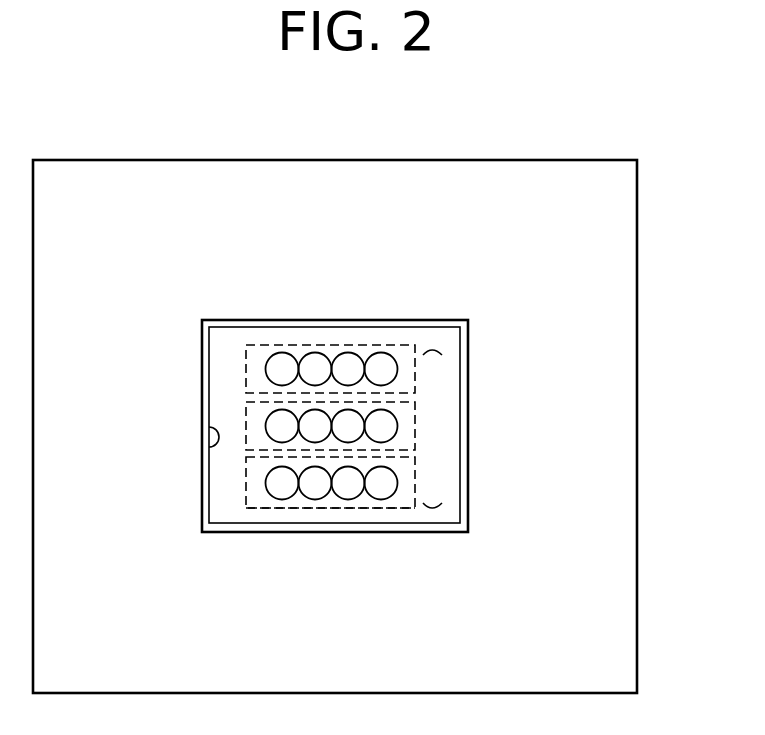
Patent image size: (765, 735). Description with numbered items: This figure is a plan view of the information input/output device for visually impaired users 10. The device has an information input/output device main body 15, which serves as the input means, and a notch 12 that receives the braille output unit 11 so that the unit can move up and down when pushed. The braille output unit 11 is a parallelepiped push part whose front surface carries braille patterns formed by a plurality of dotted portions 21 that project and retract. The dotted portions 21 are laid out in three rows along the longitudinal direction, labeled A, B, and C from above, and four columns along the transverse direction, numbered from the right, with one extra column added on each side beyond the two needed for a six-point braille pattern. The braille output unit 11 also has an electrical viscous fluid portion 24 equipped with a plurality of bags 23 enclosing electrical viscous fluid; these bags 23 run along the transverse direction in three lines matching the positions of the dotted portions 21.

The information input/output device for visually impaired users 10 is at (484, 284).
The braille output unit 11 is at (447, 412).
The notch 12 is at (217, 450).
The information input/output device main body 15 is at (470, 357).
The dotted portions 21 is at (350, 363).
The bags 23 is at (263, 342).
The electrical viscous fluid portion 24 is at (386, 510).